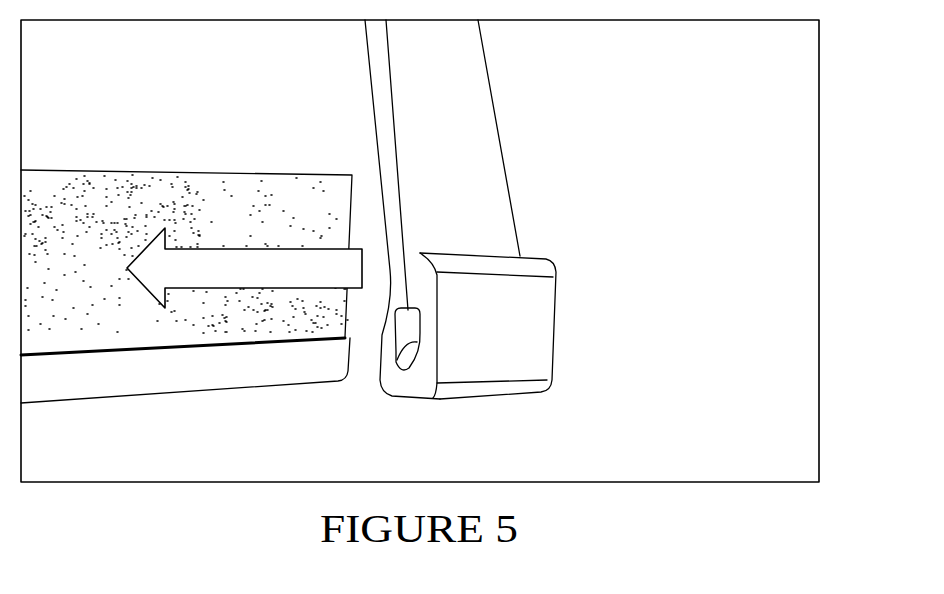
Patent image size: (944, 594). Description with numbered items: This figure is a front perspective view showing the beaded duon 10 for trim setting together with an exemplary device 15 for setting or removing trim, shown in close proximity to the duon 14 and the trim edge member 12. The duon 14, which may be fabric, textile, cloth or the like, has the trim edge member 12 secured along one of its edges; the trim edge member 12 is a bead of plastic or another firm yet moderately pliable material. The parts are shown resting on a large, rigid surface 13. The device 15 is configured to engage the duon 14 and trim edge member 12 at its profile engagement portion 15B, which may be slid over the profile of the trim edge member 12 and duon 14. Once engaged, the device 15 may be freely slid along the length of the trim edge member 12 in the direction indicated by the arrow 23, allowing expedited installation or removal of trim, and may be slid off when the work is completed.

The beaded duon 10 is at (652, 135).
The trim edge member 12 is at (182, 392).
The rigid surface 13 is at (810, 416).
The duon 14 is at (187, 171).
The device 15 is at (500, 141).
The profile engagement portion 15B is at (396, 362).
The arrow 23 is at (262, 249).